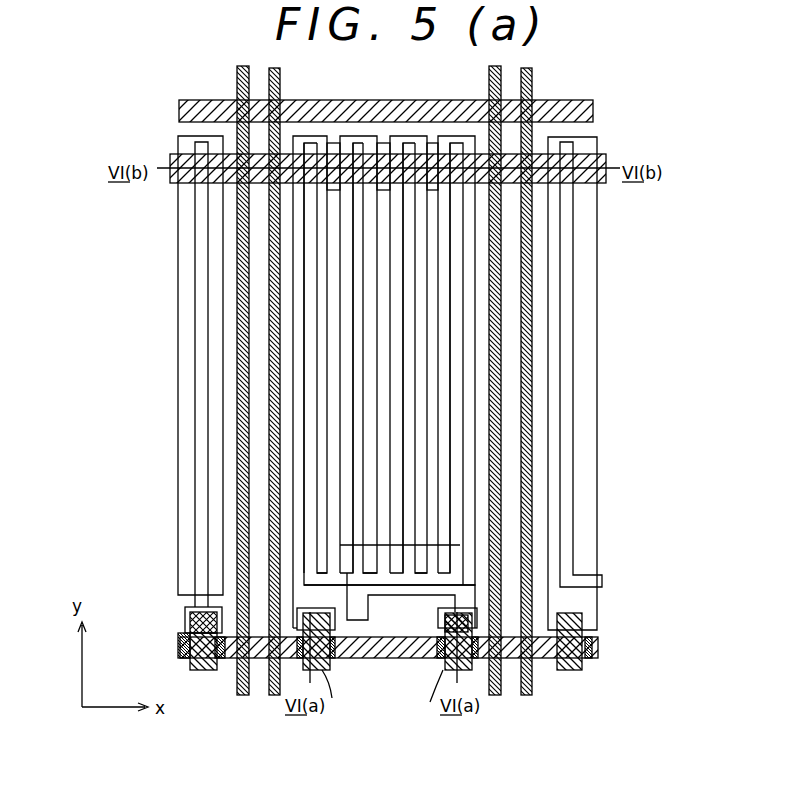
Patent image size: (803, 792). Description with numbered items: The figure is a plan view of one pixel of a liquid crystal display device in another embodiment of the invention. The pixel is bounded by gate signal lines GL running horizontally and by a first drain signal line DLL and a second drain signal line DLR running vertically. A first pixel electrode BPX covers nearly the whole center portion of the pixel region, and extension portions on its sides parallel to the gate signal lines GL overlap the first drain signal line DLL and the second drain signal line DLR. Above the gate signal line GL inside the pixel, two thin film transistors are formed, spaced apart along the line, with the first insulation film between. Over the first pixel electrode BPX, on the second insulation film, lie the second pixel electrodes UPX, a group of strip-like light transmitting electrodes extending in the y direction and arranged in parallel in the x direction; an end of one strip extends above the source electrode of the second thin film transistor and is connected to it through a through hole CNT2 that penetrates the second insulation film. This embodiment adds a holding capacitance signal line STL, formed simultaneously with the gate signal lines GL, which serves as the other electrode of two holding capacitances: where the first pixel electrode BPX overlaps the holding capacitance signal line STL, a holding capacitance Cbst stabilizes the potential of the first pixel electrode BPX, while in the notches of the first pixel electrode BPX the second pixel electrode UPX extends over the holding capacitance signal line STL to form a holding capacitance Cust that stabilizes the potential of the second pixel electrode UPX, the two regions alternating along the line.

The gate signal line GL is at (593, 111).
The holding capacitance signal line STL is at (603, 183).
The second drain signal line DLR is at (236, 88).
The first drain signal line DLL is at (281, 84).
The holding capacitance Cbst is at (297, 187).
The holding capacitance Cust is at (338, 198).
The second pixel electrode UPX is at (305, 537).
The first pixel electrode BPX is at (293, 573).
The through hole CNT2 is at (445, 621).